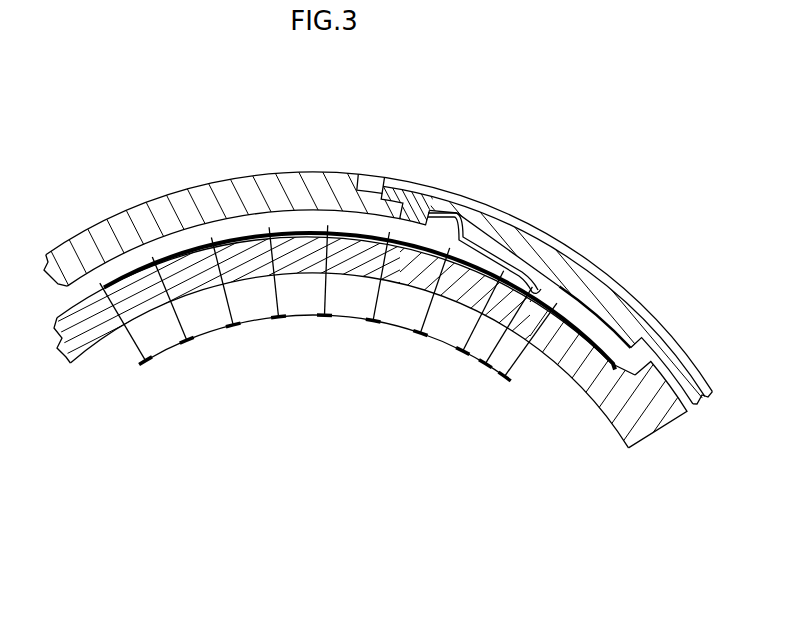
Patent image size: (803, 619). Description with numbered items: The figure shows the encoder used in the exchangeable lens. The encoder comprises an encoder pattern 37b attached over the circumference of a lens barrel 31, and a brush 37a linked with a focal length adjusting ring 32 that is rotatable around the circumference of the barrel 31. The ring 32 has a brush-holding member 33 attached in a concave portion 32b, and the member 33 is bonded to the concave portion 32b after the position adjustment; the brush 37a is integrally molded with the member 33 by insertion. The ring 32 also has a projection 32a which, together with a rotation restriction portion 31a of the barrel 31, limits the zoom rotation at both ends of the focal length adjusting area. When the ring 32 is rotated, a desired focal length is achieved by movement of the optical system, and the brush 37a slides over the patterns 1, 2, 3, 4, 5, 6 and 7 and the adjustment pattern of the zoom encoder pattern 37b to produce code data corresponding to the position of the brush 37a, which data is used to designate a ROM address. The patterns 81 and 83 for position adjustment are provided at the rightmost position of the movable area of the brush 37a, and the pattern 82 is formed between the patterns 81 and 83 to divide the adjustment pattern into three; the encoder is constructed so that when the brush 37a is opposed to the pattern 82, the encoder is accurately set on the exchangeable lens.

The lens barrel 31 is at (602, 392).
The rotation restriction portion 31a is at (650, 366).
The focal length adjusting ring 32 is at (328, 182).
The projection 32a is at (652, 352).
The concave portion 32b is at (371, 186).
The brush-holding member 33 is at (455, 205).
The brush 37a is at (563, 248).
The encoder pattern 37b is at (603, 328).
The pattern 1 is at (166, 350).
The pattern 2 is at (210, 332).
The pattern 3 is at (256, 320).
The pattern 4 is at (302, 316).
The pattern 5 is at (349, 318).
The pattern 6 is at (397, 326).
The pattern 7 is at (442, 342).
The pattern for position adjustment 81 is at (470, 358).
The pattern for position adjustment 82 is at (481, 371).
The pattern for position adjustment 83 is at (497, 382).